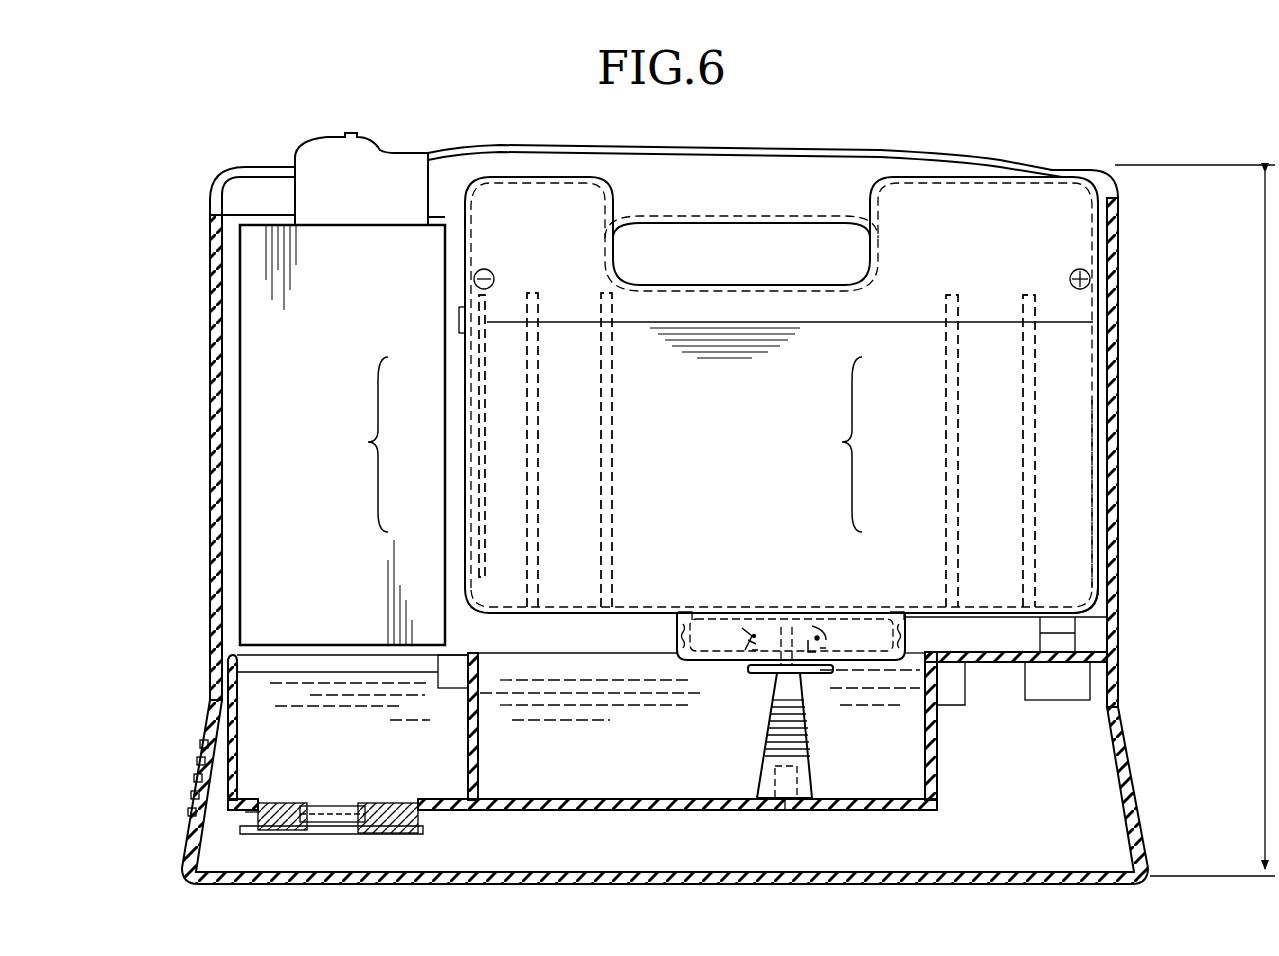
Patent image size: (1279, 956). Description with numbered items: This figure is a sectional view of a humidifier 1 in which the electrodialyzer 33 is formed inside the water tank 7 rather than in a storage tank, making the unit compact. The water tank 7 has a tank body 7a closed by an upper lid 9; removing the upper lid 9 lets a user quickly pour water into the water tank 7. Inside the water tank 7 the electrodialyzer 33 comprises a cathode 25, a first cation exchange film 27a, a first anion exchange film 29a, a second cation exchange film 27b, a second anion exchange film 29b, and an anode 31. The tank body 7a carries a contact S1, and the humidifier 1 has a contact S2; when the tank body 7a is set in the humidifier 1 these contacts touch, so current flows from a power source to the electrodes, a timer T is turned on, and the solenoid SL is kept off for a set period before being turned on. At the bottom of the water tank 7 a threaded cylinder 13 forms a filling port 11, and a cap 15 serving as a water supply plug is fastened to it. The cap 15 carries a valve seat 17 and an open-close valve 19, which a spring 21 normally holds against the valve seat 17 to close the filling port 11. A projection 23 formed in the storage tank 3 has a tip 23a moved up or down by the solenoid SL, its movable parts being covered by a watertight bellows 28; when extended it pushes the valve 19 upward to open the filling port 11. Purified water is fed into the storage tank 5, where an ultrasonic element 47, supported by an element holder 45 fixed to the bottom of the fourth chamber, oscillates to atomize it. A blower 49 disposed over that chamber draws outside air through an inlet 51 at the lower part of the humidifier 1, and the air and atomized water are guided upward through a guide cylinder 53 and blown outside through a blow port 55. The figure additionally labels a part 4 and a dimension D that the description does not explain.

The humidifier 1 is at (942, 153).
The storage tank 3 is at (905, 767).
The float 4 is at (455, 680).
The storage tank 5 is at (262, 730).
The water tank 7 is at (1038, 210).
The tank body 7a is at (1095, 592).
The upper lid 9 is at (1082, 233).
The filling port 11 is at (772, 660).
The threaded cylinder 13 is at (700, 663).
The cap 15 is at (672, 655).
The valve seat 17 is at (832, 668).
The open-close valve 19 is at (808, 622).
The spring 21 is at (745, 628).
The projection 23 is at (758, 760).
The tip 23a is at (790, 705).
The cathode 25 is at (478, 437).
The first cation exchange film 27a is at (530, 480).
The second cation exchange film 27b is at (948, 372).
The bellows 28 is at (795, 745).
The first anion exchange film 29a is at (600, 365).
The second anion exchange film 29b is at (1030, 410).
The anode 31 is at (1095, 465).
The electrodialyzer 33 is at (600, 444).
The element holder 45 is at (386, 826).
The ultrasonic element 47 is at (318, 815).
The blower 49 is at (238, 343).
The inlet 51 is at (190, 796).
The guide cylinder 53 is at (253, 289).
The blow port 55 is at (335, 135).
The contact S1 is at (1060, 625).
The contact S2 is at (1060, 645).
The solenoid SL is at (787, 805).
The timer T is at (952, 688).
The depth dimension D is at (1195, 520).